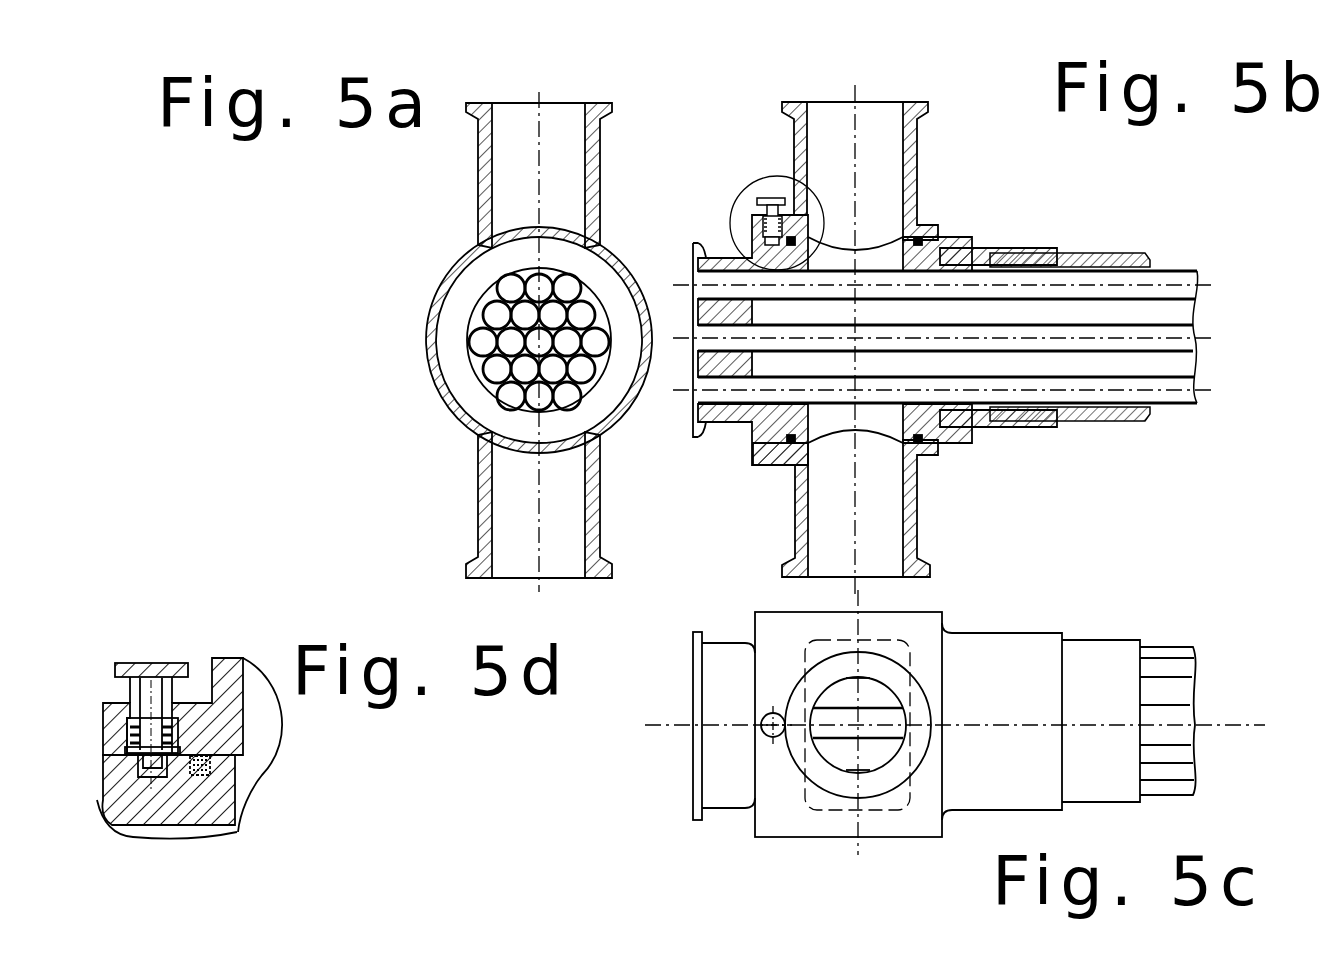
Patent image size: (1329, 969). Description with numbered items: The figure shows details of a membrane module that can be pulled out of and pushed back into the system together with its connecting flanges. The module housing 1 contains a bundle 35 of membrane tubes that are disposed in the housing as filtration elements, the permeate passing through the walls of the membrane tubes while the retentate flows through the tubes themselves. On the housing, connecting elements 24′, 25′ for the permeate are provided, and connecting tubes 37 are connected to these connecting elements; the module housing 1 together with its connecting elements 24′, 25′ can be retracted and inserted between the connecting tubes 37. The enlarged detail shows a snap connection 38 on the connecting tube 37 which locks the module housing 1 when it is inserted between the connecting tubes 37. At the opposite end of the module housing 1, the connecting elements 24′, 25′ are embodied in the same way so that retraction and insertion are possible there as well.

In FIG. 5B, the module housing 1 is at (1100, 253).
In FIG. 5C, the module housing 1 is at (1095, 647).
In FIG. 5B, the bundle of membrane tubes 35 is at (1224, 246).
In FIG. 5C, the bundle of membrane tubes 35 is at (1174, 630).
In FIG. 5B, the connecting tube 37 is at (800, 132).
In FIG. 5D, the connecting tube 37 is at (228, 658).
In FIG. 5B, the snap connection 38 is at (730, 205).
In FIG. 5D, the snap connection 38 is at (97, 680).
In FIG. 5B, the connecting element 24′ is at (940, 428).
In FIG. 5B, the connecting element 25′ is at (957, 247).